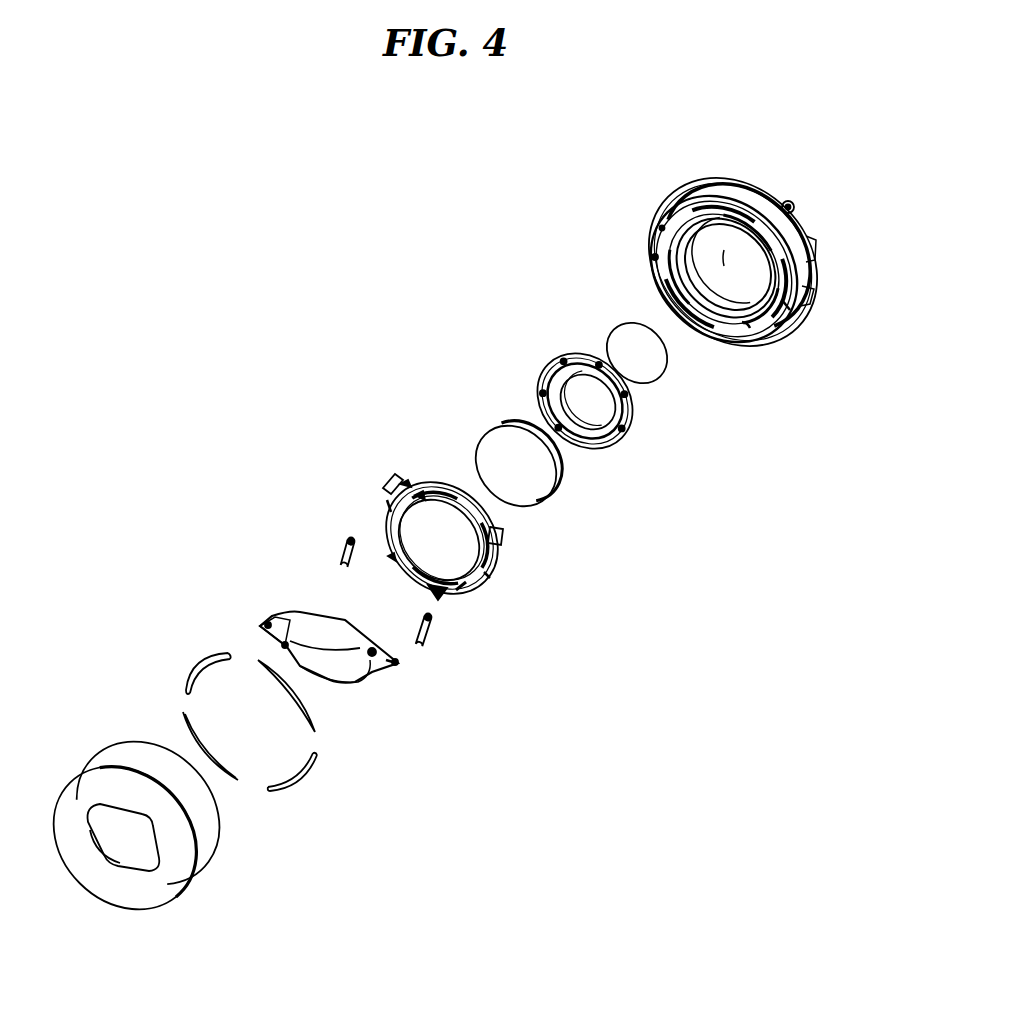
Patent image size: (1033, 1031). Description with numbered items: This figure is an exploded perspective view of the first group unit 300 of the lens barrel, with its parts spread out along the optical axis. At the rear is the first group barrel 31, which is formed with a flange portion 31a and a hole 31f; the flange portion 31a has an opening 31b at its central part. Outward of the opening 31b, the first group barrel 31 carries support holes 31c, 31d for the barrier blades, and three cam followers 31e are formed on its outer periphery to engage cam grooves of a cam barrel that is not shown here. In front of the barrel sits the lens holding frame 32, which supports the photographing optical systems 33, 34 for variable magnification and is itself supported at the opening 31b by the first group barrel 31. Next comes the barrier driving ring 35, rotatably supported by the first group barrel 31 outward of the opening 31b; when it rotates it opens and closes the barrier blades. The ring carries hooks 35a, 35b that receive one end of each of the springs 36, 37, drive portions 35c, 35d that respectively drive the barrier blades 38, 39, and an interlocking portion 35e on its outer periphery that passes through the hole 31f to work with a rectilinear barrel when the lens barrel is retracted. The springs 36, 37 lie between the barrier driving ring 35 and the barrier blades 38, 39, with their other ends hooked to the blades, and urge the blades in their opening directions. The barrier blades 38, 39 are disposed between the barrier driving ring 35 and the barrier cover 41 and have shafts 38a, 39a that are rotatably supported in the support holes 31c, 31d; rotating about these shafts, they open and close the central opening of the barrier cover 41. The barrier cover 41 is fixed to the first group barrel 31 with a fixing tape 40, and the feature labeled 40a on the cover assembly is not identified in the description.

The first group unit 300 is at (314, 328).
The first group barrel 31 is at (650, 247).
The flange portion 31a is at (745, 325).
The opening 31b is at (722, 255).
The support hole 31c is at (650, 257).
The support hole 31d is at (787, 307).
The cam follower 31e is at (790, 205).
The hole 31f is at (663, 227).
The lens holding frame 32 is at (613, 443).
The photographing optical system 33 is at (648, 368).
The photographing optical system 34 is at (497, 453).
The barrier driving ring 35 is at (502, 537).
The hook 35a is at (478, 597).
The hook 35b is at (405, 480).
The drive portion 35c is at (488, 580).
The drive portion 35d is at (390, 513).
The interlocking portion 35e is at (390, 487).
The spring 36 is at (428, 635).
The spring 37 is at (345, 553).
The barrier blade 38 is at (312, 627).
The shaft 38a is at (393, 663).
The barrier blade 39 is at (345, 673).
The shaft 39a is at (267, 620).
The fixing tape 40 is at (192, 665).
The opening 40a is at (123, 864).
The barrier cover 41 is at (202, 877).